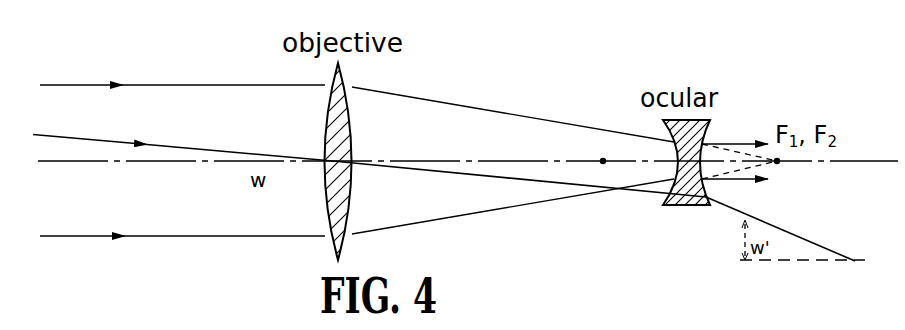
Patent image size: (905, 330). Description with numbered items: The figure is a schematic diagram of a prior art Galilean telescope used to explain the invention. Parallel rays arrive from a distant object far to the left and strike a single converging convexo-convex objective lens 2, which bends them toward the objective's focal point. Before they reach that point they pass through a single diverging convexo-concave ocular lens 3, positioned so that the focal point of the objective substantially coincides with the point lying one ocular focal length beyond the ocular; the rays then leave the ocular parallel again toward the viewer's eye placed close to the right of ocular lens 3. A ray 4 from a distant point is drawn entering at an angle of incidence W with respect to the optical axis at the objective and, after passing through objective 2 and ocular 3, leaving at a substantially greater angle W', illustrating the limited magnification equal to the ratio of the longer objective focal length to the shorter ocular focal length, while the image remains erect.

The objective lens 2 is at (352, 131).
The ocular lens 3 is at (730, 108).
The ray 4 is at (188, 147).